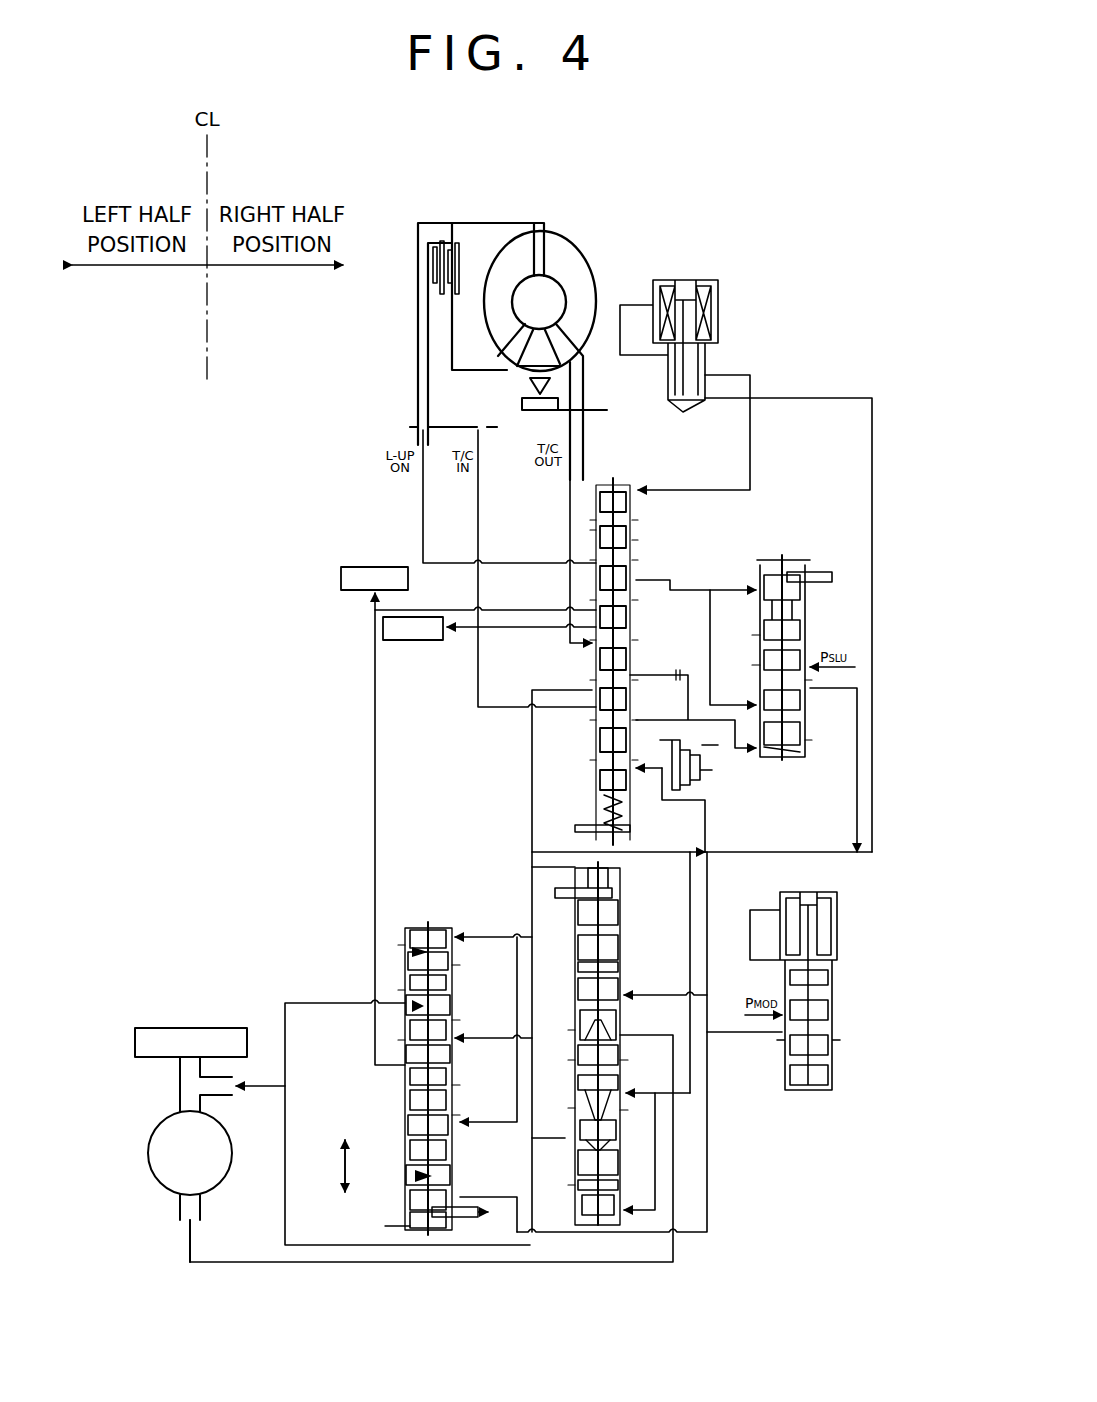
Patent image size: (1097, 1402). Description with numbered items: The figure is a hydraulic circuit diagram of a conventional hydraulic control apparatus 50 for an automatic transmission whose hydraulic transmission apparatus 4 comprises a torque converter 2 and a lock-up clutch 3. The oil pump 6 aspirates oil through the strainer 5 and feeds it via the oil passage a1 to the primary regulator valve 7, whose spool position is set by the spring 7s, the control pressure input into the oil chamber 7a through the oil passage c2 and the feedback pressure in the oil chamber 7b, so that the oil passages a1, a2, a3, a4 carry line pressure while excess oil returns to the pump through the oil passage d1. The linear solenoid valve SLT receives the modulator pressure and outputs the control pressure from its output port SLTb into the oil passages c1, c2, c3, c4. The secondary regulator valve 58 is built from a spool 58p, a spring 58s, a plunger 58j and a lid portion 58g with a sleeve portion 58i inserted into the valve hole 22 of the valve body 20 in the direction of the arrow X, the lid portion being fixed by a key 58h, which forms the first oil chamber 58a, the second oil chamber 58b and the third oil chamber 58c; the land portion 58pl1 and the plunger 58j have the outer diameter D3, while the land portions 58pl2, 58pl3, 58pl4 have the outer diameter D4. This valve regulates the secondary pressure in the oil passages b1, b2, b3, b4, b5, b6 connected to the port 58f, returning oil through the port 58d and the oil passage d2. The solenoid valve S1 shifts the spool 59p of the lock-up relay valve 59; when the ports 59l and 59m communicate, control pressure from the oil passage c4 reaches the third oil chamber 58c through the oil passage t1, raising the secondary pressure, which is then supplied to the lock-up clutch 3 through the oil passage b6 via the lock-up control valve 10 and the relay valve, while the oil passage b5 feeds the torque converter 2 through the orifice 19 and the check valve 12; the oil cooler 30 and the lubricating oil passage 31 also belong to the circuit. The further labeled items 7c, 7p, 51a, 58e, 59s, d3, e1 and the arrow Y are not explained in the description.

The torque converter 2 is at (524, 232).
The lock-up clutch 3 is at (466, 249).
The hydraulic transmission apparatus 4 is at (520, 317).
The strainer 5 is at (194, 1025).
The oil pump 6 is at (162, 1122).
The primary regulator valve 7 is at (626, 1064).
The oil chamber 7a is at (608, 995).
The oil chamber 7b is at (620, 1215).
The oil chamber of primary regulator valve 7c is at (618, 1108).
The plunger of primary regulator valve 7p is at (580, 1108).
The spring 7s is at (576, 998).
The lock-up control valve 10 is at (795, 548).
The check valve 12 is at (738, 766).
The orifice 19 is at (660, 668).
The valve body 20 is at (458, 1228).
The valve hole 22 is at (405, 1228).
The oil cooler 30 is at (418, 644).
The lubricating oil passage 31 is at (358, 565).
The hydraulic control apparatus 50 is at (432, 202).
The oil passage 51a is at (614, 478).
The secondary regulator valve 58 is at (426, 1038).
The first oil chamber 58a is at (448, 1183).
The second oil chamber 58b is at (418, 932).
The third oil chamber 58c is at (415, 1138).
The port 58d is at (398, 1008).
The port 58e is at (397, 1066).
The port 58f is at (455, 1056).
The lid portion 58g is at (408, 1203).
The key 58h is at (478, 1211).
The sleeve portion 58i is at (446, 1163).
The plunger 58j is at (446, 1142).
The spool 58p is at (408, 1040).
The spring 58s is at (446, 1098).
The land portion 58pl1 is at (448, 950).
The land portion 58pl2 is at (452, 976).
The land portion 58pl3 is at (446, 1000).
The land portion 58pl4 is at (450, 1078).
The lock-up relay valve 59 is at (611, 633).
The port 59l is at (653, 758).
The port 59m is at (598, 750).
The spool 59p is at (626, 598).
The spring of lock-up relay valve 59s is at (620, 800).
The solenoid valve S1 is at (712, 274).
The linear solenoid valve SLT is at (838, 893).
The output port SLTb is at (782, 1062).
The outer diameter D3 is at (410, 952).
The outer diameter D4 is at (412, 990).
The arrow X is at (343, 1152).
The direction Y is at (342, 1178).
The oil passage a1 is at (578, 1262).
The oil passage a2 is at (640, 1092).
The oil passage a3 is at (655, 1150).
The oil passage a4 is at (690, 916).
The oil passage b1 is at (547, 1081).
The oil passage b2 is at (505, 1040).
The oil passage b3 is at (505, 935).
The oil passage b4 is at (532, 874).
The oil passage b5 is at (532, 812).
The oil passage b6 is at (748, 852).
The oil passage c1 is at (735, 1032).
The oil passage c2 is at (665, 990).
The oil passage c3 is at (707, 1168).
The oil passage c4 is at (705, 815).
The oil passage d1 is at (532, 1196).
The oil passage d2 is at (322, 1003).
The oil passage d3 is at (255, 1086).
The oil passage e1 is at (750, 445).
The oil passage t1 is at (532, 805).